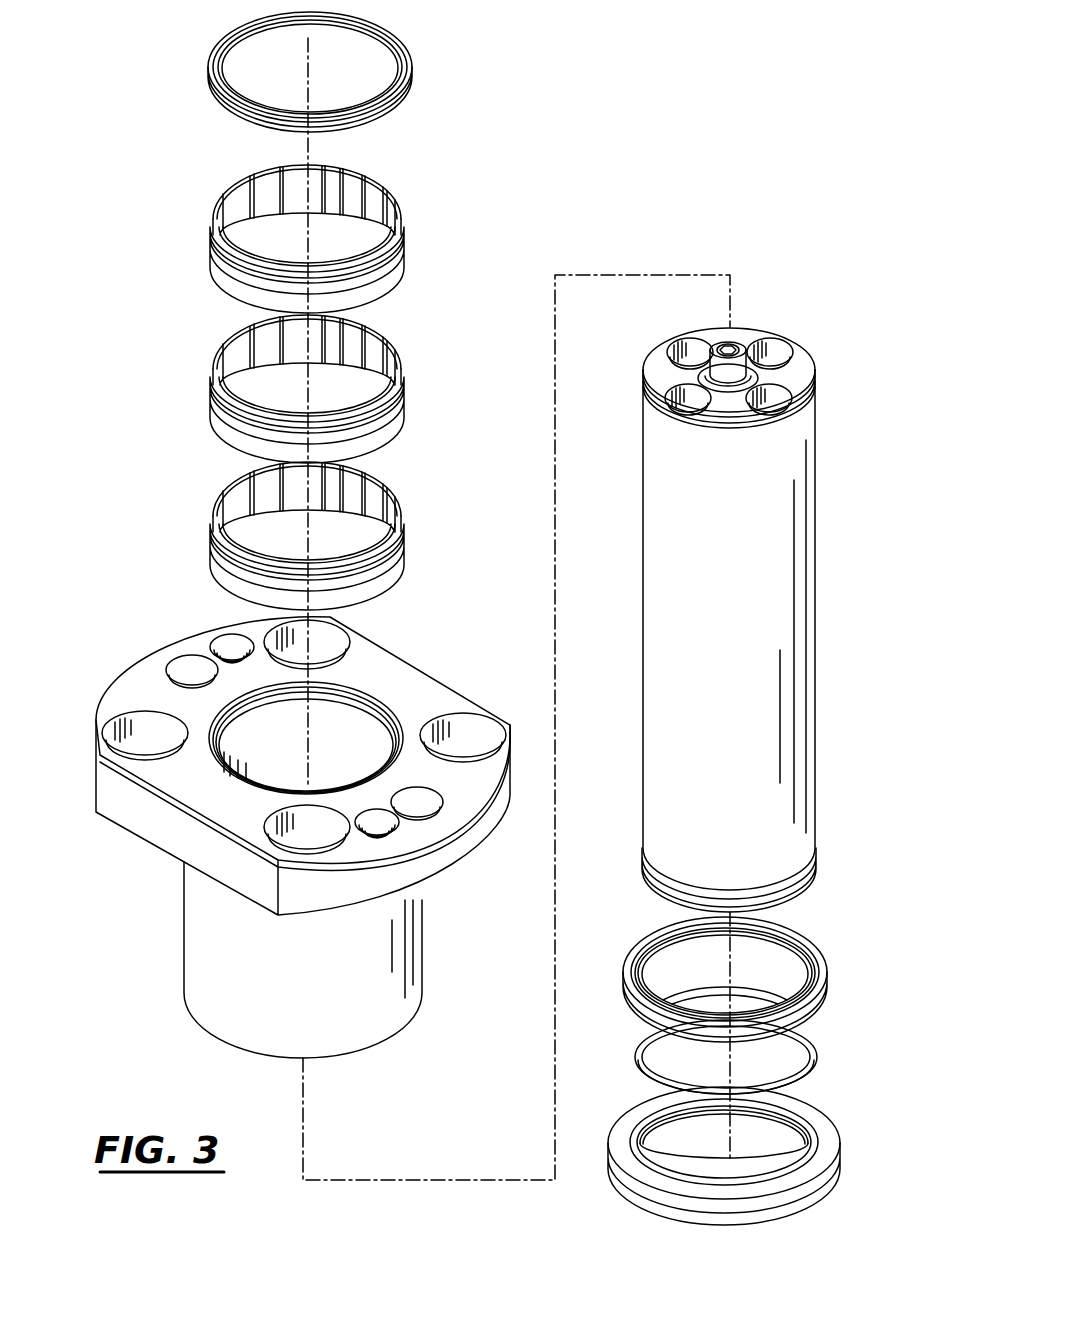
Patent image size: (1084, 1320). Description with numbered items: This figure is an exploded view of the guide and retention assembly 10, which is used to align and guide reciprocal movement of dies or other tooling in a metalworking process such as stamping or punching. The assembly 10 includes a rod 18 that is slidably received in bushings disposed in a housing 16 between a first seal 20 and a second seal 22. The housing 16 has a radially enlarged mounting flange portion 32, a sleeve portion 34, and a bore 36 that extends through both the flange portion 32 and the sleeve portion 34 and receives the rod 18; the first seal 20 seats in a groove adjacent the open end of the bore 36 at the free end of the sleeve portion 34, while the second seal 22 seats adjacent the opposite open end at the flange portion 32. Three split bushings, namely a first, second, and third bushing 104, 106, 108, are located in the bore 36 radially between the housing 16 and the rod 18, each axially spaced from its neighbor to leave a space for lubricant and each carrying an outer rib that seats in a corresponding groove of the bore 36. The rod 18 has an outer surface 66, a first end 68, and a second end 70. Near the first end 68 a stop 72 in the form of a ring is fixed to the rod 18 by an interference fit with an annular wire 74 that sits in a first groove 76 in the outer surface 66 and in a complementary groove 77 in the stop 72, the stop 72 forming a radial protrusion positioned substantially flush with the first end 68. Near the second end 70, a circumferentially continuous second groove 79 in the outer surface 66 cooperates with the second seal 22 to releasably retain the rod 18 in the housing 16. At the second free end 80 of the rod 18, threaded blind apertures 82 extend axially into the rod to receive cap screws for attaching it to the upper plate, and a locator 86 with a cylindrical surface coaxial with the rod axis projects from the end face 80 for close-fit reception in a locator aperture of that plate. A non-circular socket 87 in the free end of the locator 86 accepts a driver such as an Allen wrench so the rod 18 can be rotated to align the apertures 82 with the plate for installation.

The guide and retention assembly 10 is at (742, 675).
The housing 16 is at (303, 832).
The rod 18 is at (734, 593).
The first seal 20 is at (828, 955).
The second seal 22 is at (207, 68).
The mounting flange portion 32 is at (303, 761).
The sleeve portion 34 is at (380, 953).
The bore 36 is at (356, 743).
The outer surface 66 is at (767, 472).
The first end 68 is at (776, 808).
The second end 70 is at (797, 433).
The stop 72 is at (751, 1158).
The annular wire 74 is at (817, 1045).
The first groove 76 is at (652, 873).
The complementary groove 77 is at (782, 1123).
The second groove 79 is at (813, 389).
The second free end 80 is at (803, 368).
The threaded blind apertures 82 is at (770, 396).
The locator 86 is at (713, 373).
The non-circular socket 87 is at (733, 349).
The first bushing 104 is at (389, 486).
The second bushing 106 is at (389, 350).
The third bushing 108 is at (388, 195).